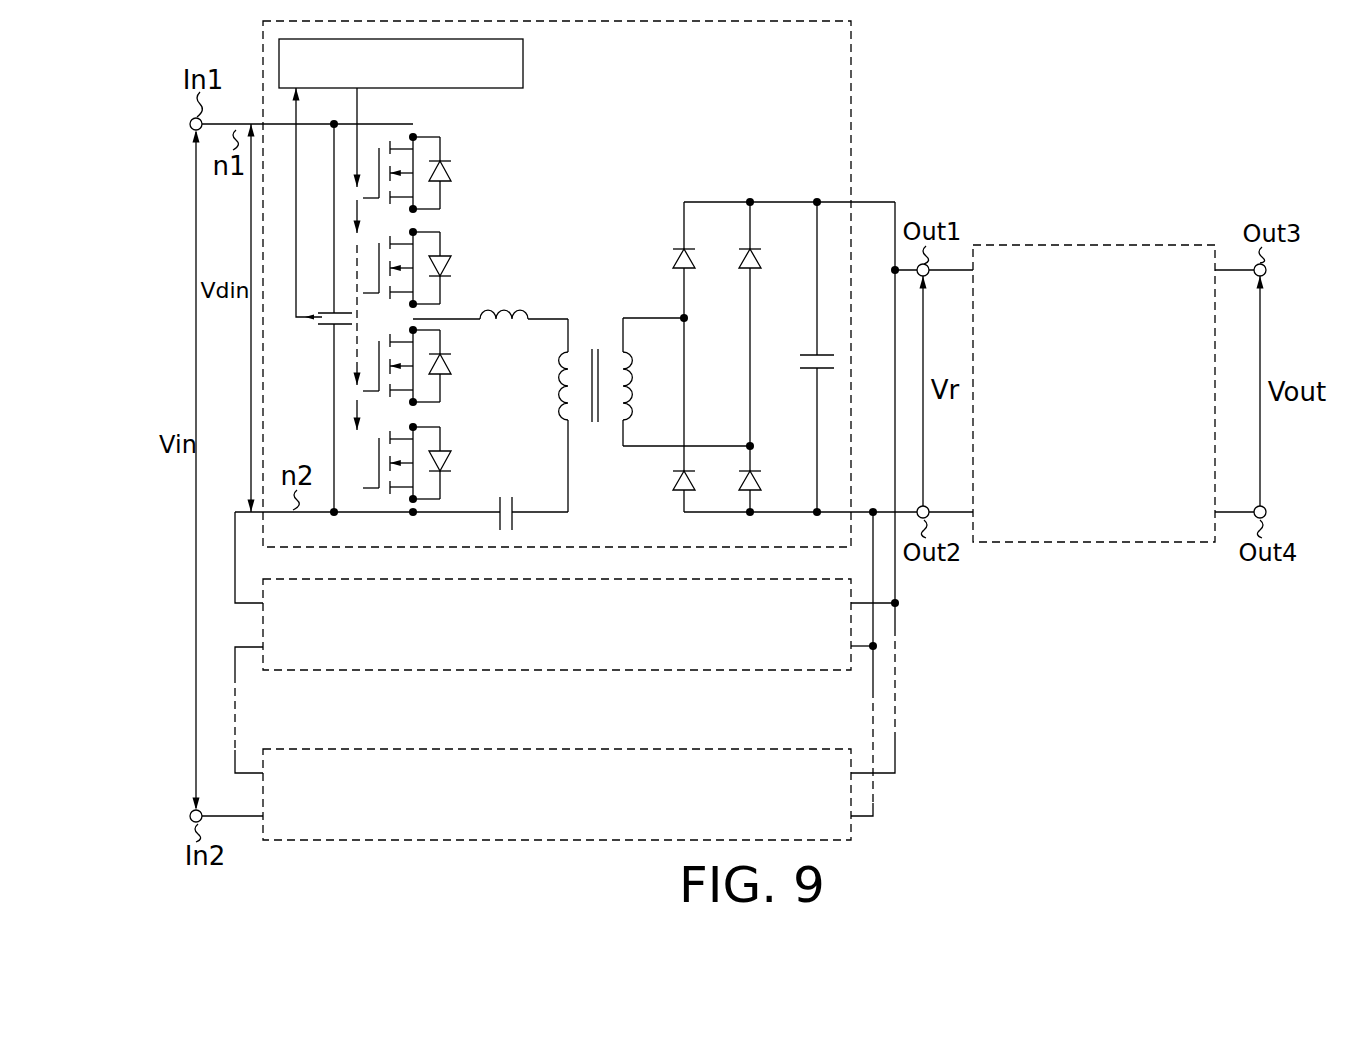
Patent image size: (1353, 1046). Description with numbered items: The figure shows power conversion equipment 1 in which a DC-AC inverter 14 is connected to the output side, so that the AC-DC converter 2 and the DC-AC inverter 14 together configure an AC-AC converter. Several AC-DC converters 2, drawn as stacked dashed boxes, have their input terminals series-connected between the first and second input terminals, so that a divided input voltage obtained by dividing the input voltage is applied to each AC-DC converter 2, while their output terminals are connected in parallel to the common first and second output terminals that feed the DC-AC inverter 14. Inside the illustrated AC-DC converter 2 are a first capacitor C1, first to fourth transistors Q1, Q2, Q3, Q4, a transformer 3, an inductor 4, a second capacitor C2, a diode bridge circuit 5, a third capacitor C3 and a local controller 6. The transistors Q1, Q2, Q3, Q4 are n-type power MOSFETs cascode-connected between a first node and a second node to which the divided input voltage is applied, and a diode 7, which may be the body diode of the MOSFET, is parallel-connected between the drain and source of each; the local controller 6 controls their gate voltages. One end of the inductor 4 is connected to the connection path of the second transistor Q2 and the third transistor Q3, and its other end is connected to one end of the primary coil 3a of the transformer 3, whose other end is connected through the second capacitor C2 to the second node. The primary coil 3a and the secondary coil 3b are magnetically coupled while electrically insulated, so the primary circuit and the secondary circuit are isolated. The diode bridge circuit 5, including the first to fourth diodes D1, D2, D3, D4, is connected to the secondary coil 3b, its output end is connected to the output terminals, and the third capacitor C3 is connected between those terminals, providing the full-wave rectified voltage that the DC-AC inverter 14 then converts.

The power conversion equipment 1 is at (1067, 820).
The AC-DC converter 2 is at (852, 68).
The transformer 3 is at (596, 372).
The primary coil 3a is at (572, 342).
The secondary coil 3b is at (617, 362).
The inductor 4 is at (503, 308).
The diode bridge circuit 5 is at (793, 357).
The local controller 6 is at (524, 66).
The diode 7 is at (452, 174).
The DC-AC inverter 14 is at (1100, 543).
The first capacitor C1 is at (322, 332).
The second capacitor C2 is at (506, 496).
The third capacitor C3 is at (806, 352).
The first diode D1 is at (673, 262).
The second diode D2 is at (672, 482).
The third diode D3 is at (740, 262).
The fourth diode D4 is at (762, 481).
The first transistor Q1 is at (386, 137).
The second transistor Q2 is at (386, 255).
The third transistor Q3 is at (386, 353).
The fourth transistor Q4 is at (386, 451).